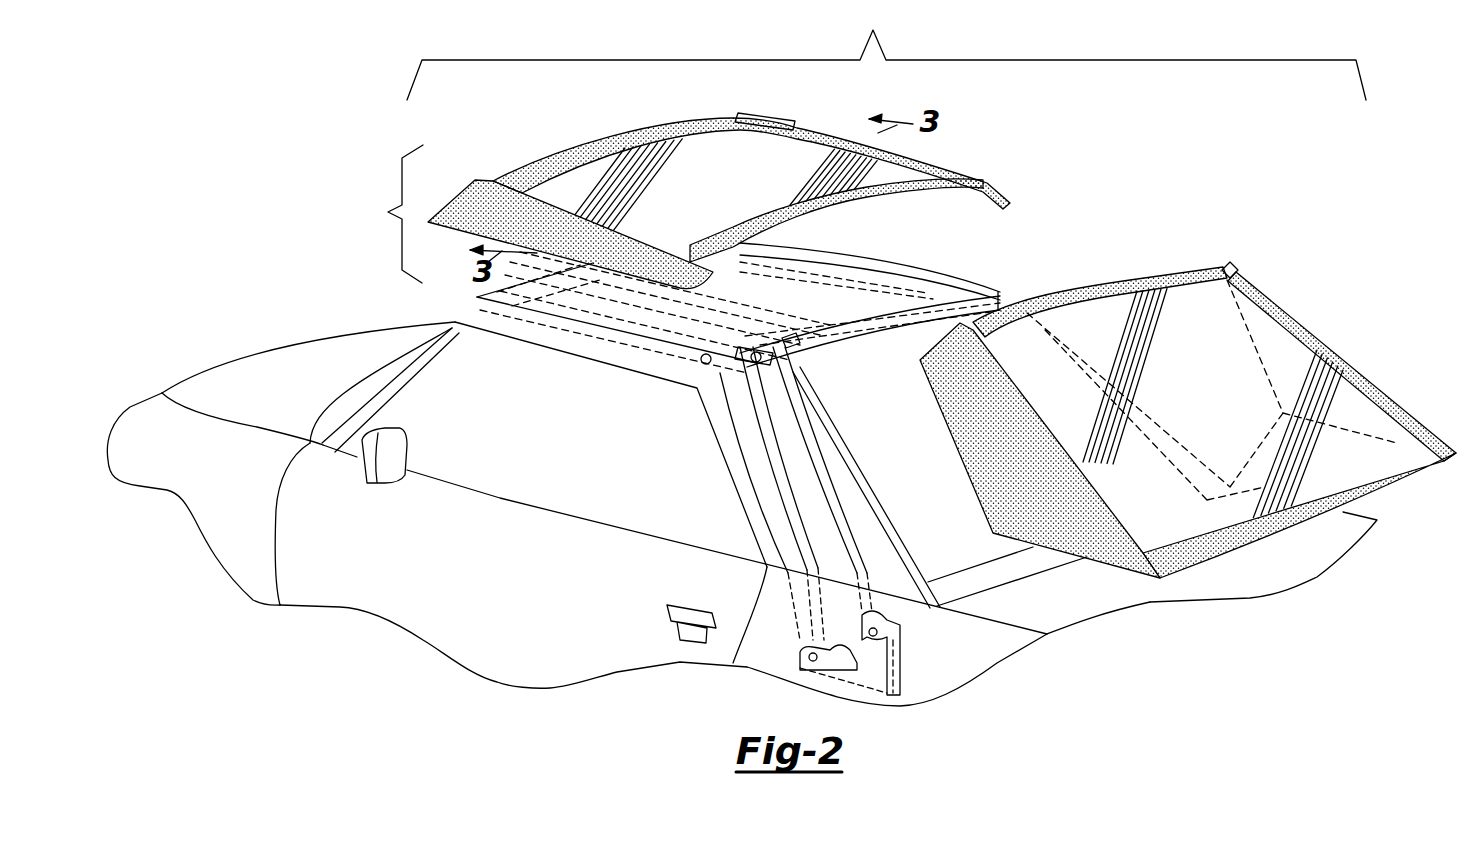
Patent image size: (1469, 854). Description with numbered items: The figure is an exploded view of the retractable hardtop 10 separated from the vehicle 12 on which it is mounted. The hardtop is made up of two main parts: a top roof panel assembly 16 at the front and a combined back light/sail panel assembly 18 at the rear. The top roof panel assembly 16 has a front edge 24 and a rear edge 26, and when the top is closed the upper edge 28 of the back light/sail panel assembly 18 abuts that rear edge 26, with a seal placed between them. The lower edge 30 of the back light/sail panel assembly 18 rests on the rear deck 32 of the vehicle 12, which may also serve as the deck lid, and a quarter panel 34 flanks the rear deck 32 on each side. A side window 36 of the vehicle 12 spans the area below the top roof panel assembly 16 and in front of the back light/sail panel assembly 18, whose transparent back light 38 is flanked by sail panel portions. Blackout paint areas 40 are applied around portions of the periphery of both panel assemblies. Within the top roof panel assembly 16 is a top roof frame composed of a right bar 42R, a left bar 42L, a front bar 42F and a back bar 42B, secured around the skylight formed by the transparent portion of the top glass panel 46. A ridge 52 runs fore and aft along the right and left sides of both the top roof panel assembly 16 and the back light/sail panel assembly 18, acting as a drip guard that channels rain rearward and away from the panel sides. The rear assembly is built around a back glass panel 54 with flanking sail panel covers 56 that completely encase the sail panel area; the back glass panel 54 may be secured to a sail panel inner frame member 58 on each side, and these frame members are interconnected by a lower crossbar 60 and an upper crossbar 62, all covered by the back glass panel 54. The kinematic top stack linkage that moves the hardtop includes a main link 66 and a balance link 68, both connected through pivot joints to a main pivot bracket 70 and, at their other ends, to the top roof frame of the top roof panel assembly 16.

The retractable hardtop 10 is at (869, 25).
The vehicle 12 is at (263, 367).
The top roof panel assembly 16 is at (388, 214).
The back light/sail panel assembly 18 is at (1305, 323).
The front edge 24 is at (533, 165).
The rear edge 26 is at (955, 197).
The upper edge 28 is at (1120, 290).
The lower edge 30 is at (1383, 490).
The rear deck 32 is at (1300, 563).
The quarter panel 34 is at (953, 660).
The side window 36 is at (633, 513).
The back light 38 is at (1340, 400).
The blackout paint areas 40 is at (457, 195).
The front bar 42F is at (597, 292).
The right bar 42R is at (905, 268).
The left bar 42L is at (670, 323).
The back bar 42B is at (863, 305).
The top glass panel 46 is at (927, 172).
The ridge 52 is at (793, 140).
The back glass panel 54 is at (1208, 303).
The sail panel covers 56 is at (1027, 400).
The sail panel inner frame member 58 is at (743, 457).
The lower crossbar 60 is at (1007, 577).
The upper crossbar 62 is at (803, 343).
The main link 66 is at (783, 515).
The balance link 68 is at (850, 537).
The main pivot bracket 70 is at (800, 673).